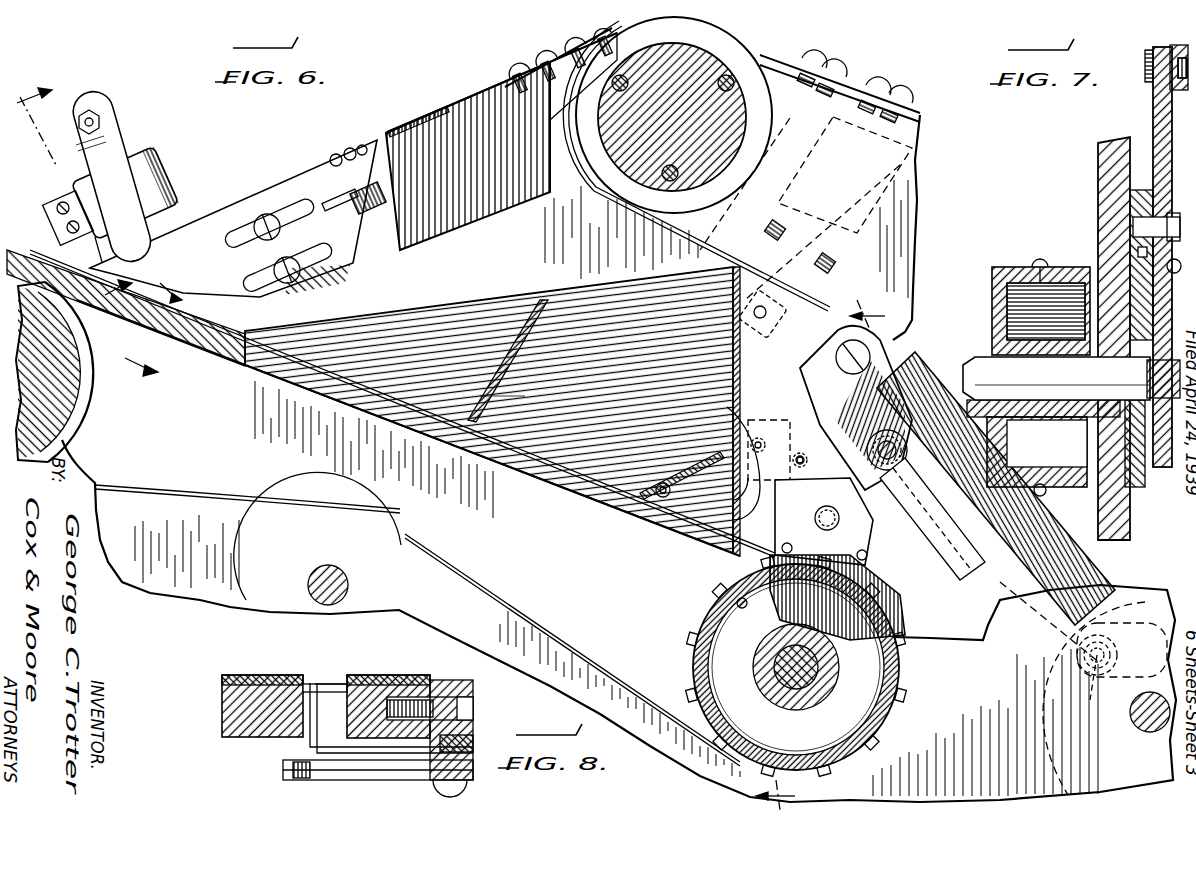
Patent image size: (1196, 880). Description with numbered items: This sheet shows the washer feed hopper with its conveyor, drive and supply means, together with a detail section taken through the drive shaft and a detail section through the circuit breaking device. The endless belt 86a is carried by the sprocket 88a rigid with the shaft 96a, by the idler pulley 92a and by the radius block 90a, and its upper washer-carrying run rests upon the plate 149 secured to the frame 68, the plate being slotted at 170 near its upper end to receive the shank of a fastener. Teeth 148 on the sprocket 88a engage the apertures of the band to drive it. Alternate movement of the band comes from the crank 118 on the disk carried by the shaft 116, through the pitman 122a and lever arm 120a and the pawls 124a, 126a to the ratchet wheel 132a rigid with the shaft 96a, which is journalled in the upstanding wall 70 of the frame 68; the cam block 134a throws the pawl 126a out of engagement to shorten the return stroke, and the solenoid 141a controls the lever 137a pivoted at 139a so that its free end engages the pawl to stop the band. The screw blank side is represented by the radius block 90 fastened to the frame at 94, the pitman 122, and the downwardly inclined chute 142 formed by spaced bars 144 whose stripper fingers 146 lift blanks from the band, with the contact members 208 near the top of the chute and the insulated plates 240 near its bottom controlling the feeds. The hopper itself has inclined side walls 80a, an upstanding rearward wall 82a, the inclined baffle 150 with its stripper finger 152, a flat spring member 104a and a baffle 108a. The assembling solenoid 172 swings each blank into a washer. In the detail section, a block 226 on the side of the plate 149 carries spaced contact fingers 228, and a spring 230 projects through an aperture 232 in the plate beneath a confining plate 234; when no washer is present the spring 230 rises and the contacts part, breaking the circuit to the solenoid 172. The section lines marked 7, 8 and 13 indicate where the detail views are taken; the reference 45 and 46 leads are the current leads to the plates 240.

In FIG. 6, the upstanding wall 70 is at (195, 596).
In FIG. 7, the upstanding wall 70 is at (1098, 173).
In FIG. 6, the radius block 90a is at (90, 393).
In FIG. 6, the idler pulley 92a is at (368, 526).
In FIG. 6, the plate 149 is at (283, 367).
In FIG. 8, the plate 149 is at (225, 722).
In FIG. 6, the slot 170 is at (30, 262).
In FIG. 6, the solenoid 172 is at (155, 176).
In FIG. 6, the insulated plates 240 is at (336, 150).
In FIG. 6, the pin 45 is at (325, 193).
In FIG. 6, the block 46 is at (355, 173).
In FIG. 6, the spaced bars 144 is at (502, 205).
In FIG. 6, the chute 142 is at (478, 88).
In FIG. 6, the contact members 208 is at (432, 112).
In FIG. 6, the stripper fingers 146 is at (590, 40).
In FIG. 6, the radius block 90 is at (730, 118).
In FIG. 6, the fastening 94 is at (712, 76).
In FIG. 6, the inclined side walls 80a is at (603, 292).
In FIG. 6, the upstanding rearward wall 82a is at (740, 362).
In FIG. 6, the inclined baffle 150 is at (510, 345).
In FIG. 6, the stripper finger 152 is at (519, 394).
In FIG. 6, the baffle 108a is at (692, 478).
In FIG. 6, the flat spring member 104a is at (728, 548).
In FIG. 6, the cam block 134a is at (778, 432).
In FIG. 6, the pawl 126a is at (796, 465).
In FIG. 7, the pawl 126a is at (1133, 222).
In FIG. 6, the solenoid 141a is at (905, 157).
In FIG. 6, the frame 68 is at (922, 232).
In FIG. 6, the lever arm 120a is at (905, 450).
In FIG. 7, the lever arm 120a is at (1153, 113).
In FIG. 6, the pivot 139a is at (889, 440).
In FIG. 6, the pitman 122a is at (1010, 528).
In FIG. 7, the pitman 122a is at (1160, 88).
In FIG. 6, the lever 137a is at (935, 530).
In FIG. 6, the pawl 124a is at (845, 505).
In FIG. 7, the pawl 124a is at (1130, 200).
In FIG. 6, the ratchet wheel 132a is at (880, 576).
In FIG. 7, the ratchet wheel 132a is at (1135, 490).
In FIG. 6, the sprocket 88a is at (893, 710).
In FIG. 7, the sprocket 88a is at (992, 282).
In FIG. 6, the shaft 96a is at (778, 685).
In FIG. 7, the shaft 96a is at (1071, 378).
In FIG. 6, the teeth 148 is at (737, 600).
In FIG. 7, the teeth 148 is at (1040, 258).
In FIG. 6, the endless belt 86a is at (588, 655).
In FIG. 7, the endless belt 86a is at (1040, 484).
In FIG. 6, the pitman 122 is at (1150, 595).
In FIG. 6, the crank 118 is at (1097, 676).
In FIG. 6, the shaft 116 is at (1130, 722).
In FIG. 6, the section line 13 is at (74, 187).
In FIG. 6, the section line 8 is at (145, 326).
In FIG. 6, the section line 7 is at (826, 555).
In FIG. 8, the aperture 232 is at (333, 684).
In FIG. 8, the confining plate 234 is at (408, 678).
In FIG. 8, the block 226 is at (455, 688).
In FIG. 8, the spring 230 is at (310, 750).
In FIG. 8, the contact fingers 228 is at (362, 780).